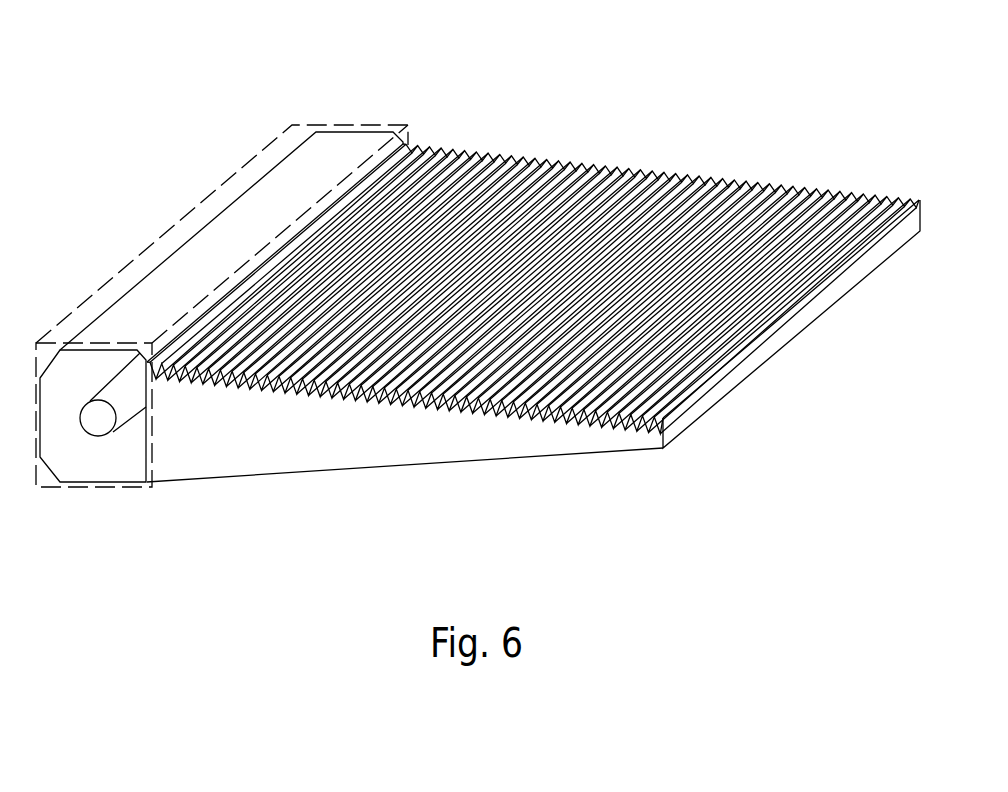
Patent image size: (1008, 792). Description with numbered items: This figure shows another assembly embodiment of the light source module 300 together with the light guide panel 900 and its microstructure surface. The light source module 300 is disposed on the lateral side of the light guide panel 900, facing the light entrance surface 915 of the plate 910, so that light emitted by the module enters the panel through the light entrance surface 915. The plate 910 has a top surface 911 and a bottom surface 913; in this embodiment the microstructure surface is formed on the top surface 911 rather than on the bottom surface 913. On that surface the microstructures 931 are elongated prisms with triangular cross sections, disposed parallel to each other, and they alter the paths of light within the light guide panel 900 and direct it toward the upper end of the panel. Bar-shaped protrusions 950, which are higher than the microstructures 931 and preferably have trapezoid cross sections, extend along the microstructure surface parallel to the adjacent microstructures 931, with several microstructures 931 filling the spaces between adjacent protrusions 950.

The light source module 300 is at (35, 438).
The light guide panel 900 is at (480, 311).
The plate 910 is at (413, 448).
The top surface 911 is at (638, 247).
The bottom surface 913 is at (318, 472).
The light entrance surface 915 is at (147, 438).
The microstructures 931 is at (247, 345).
The protrusions 950 is at (630, 363).